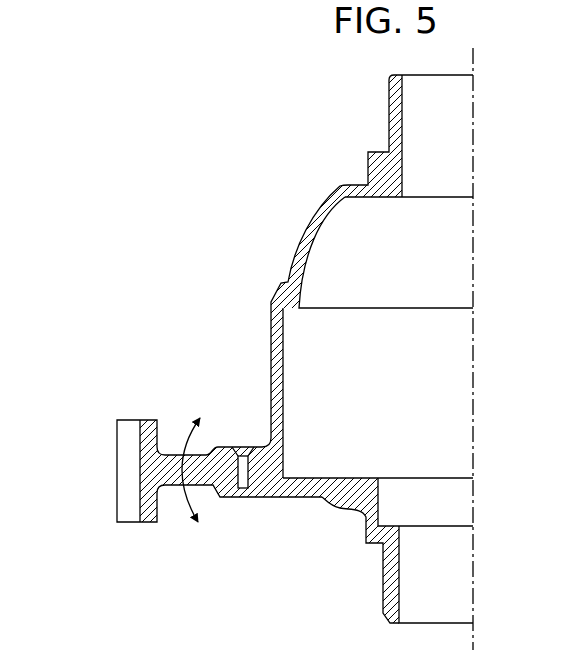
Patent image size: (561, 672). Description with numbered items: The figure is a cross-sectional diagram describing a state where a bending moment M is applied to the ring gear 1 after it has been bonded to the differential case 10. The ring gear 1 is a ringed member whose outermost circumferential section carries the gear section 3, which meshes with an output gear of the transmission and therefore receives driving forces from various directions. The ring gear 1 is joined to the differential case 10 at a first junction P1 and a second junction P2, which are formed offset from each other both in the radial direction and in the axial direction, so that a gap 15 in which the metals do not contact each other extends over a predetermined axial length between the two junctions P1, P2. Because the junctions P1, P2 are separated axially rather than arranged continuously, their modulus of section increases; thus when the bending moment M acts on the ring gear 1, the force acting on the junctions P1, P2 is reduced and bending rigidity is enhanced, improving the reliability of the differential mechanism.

The differential case 10 is at (298, 207).
The ring gear 1 is at (148, 416).
The gear section 3 is at (127, 473).
The gap 15 is at (286, 460).
The first junction P1 is at (251, 490).
The second junction P2 is at (232, 448).
The bending moment M is at (197, 489).